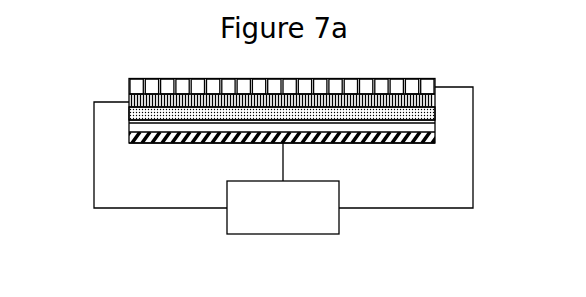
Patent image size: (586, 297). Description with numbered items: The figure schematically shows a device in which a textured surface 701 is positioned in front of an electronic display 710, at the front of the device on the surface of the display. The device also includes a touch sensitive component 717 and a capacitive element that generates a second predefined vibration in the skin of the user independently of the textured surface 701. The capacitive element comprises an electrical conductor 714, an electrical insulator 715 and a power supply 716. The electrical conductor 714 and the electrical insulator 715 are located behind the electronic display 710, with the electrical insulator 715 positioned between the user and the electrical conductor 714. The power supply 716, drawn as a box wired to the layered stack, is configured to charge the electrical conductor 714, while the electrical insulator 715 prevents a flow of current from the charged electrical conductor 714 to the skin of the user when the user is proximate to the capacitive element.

The textured surface 701 is at (397, 87).
The touch sensitive component 717 is at (435, 100).
The electronic display 710 is at (435, 116).
The electrical insulator 715 is at (143, 126).
The electrical conductor 714 is at (135, 139).
The power supply 716 is at (312, 218).